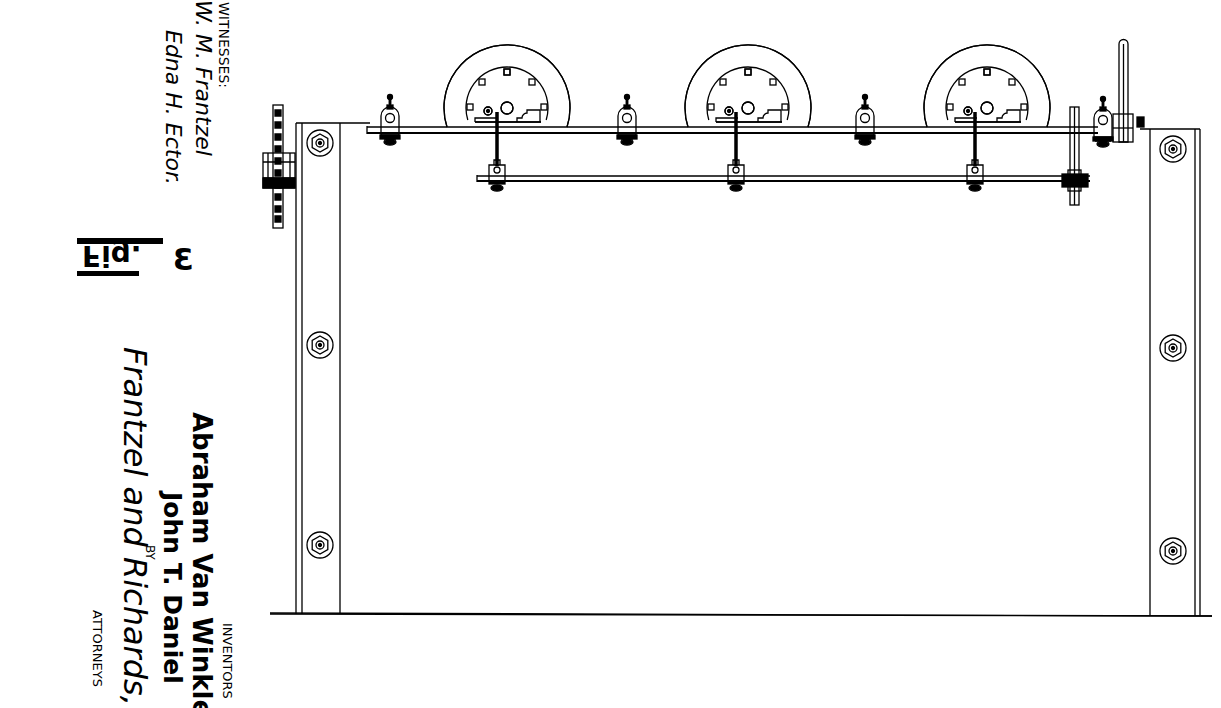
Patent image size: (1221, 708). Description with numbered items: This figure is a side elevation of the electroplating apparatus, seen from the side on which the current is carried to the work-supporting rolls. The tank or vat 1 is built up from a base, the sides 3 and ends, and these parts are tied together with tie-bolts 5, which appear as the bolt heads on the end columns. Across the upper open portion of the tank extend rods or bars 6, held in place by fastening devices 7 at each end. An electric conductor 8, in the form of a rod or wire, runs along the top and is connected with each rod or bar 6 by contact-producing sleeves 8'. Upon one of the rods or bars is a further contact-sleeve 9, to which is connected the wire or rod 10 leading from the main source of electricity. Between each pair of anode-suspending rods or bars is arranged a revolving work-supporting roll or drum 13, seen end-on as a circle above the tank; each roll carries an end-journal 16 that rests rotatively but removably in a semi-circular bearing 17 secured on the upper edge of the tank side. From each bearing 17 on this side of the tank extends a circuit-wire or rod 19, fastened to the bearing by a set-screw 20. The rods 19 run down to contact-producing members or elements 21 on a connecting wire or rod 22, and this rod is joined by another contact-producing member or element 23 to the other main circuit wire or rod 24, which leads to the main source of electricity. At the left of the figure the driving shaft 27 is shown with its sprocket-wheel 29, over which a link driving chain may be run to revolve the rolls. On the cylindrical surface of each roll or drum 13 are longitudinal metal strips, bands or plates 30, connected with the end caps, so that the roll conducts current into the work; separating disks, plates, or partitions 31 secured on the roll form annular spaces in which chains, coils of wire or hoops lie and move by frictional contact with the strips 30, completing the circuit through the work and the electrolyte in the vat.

The tank or vat 1 is at (727, 369).
The sides 3 is at (583, 602).
The tie-bolts 5 is at (322, 132).
The rods or bars 6 is at (397, 112).
The fastening devices 7 is at (384, 114).
The electric conductor 8 is at (732, 150).
The contact-producing sleeves 8' is at (742, 159).
The contact-sleeve 9 is at (1132, 120).
The wire or rod 10 is at (1129, 67).
The work-supporting roll or drum 13 is at (498, 80).
The end-journal 16 is at (509, 115).
The semi-circular bearings 17 is at (503, 104).
The circuit-wires or rods 19 is at (495, 148).
The set-screw 20 is at (485, 109).
The contact-producing members or elements 21 is at (494, 184).
The connecting wire or rod 22 is at (660, 183).
The contact-producing member or element 23 is at (1068, 186).
The main circuit wire or rod 24 is at (1070, 152).
The driving shaft 27 is at (262, 172).
The sprocket-wheel 29 is at (282, 104).
The metal strips, bands or plates 30 is at (549, 110).
The separating disks, plates, or partitions 31 is at (474, 58).